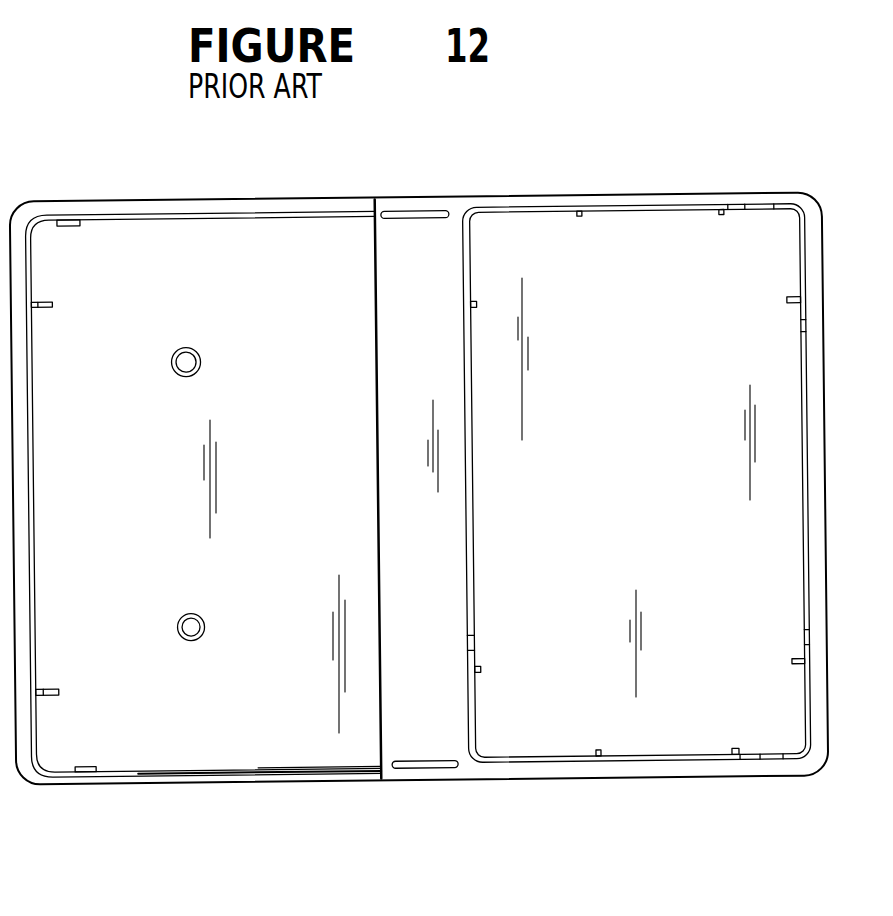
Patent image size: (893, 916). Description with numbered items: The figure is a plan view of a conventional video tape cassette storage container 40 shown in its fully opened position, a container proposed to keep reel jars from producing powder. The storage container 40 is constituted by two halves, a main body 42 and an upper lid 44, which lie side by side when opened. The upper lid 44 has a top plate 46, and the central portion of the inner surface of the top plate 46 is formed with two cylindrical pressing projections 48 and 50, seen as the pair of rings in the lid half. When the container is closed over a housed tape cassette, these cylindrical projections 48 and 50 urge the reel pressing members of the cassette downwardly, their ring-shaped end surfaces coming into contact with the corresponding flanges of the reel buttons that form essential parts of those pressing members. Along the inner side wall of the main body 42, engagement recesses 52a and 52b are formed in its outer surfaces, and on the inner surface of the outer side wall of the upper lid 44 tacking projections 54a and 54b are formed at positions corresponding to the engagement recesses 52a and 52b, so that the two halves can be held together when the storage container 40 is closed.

The tape cassette storage container 40 is at (465, 153).
The main body 42 is at (615, 186).
The upper lid 44 is at (207, 195).
The top plate 46 is at (205, 745).
The cylindrical pressing projection 48 is at (203, 617).
The cylindrical pressing projection 50 is at (198, 350).
The engagement recess 52a is at (753, 759).
The engagement recess 52b is at (763, 204).
The tacking projection 54a is at (80, 773).
The tacking projection 54b is at (74, 214).